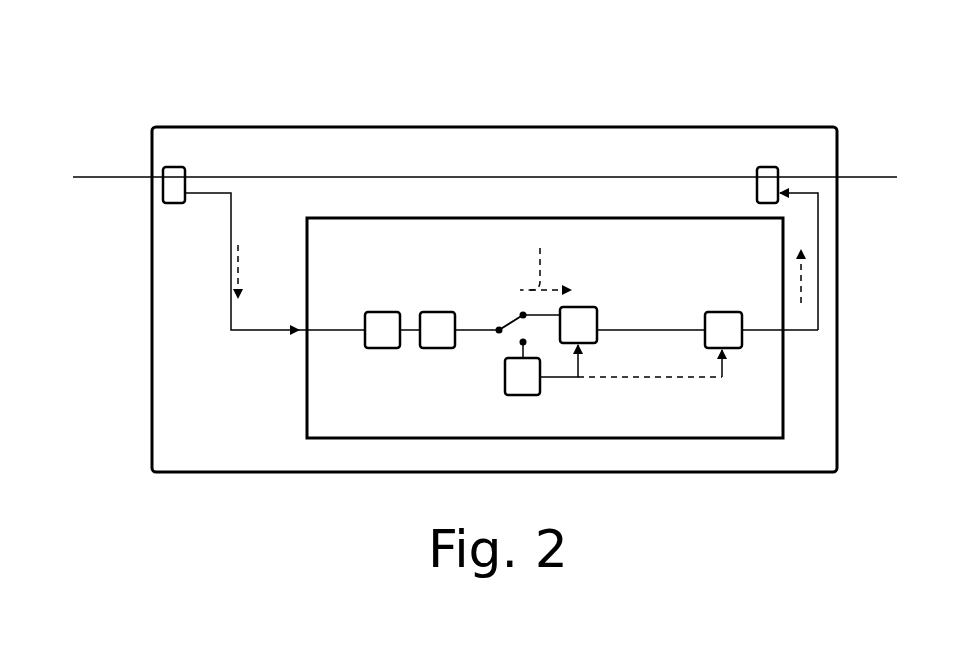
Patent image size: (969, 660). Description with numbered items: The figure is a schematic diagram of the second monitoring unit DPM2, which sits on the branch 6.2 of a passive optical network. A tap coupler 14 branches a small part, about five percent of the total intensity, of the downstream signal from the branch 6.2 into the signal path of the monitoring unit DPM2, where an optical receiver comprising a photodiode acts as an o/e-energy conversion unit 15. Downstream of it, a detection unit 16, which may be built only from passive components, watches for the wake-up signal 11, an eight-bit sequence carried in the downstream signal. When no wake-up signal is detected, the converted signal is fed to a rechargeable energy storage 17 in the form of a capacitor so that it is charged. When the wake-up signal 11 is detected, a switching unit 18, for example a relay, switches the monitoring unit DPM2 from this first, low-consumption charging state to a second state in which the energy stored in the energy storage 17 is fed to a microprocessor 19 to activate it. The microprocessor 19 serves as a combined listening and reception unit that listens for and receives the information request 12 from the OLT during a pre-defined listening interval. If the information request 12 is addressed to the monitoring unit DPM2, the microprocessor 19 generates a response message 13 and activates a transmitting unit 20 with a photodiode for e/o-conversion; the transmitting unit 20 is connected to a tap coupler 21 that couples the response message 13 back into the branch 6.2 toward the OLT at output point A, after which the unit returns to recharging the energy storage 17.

The second monitoring unit DPM2 is at (500, 100).
The branch 6.2 is at (108, 175).
The tap coupler 14 is at (173, 178).
The tap coupler 21 is at (766, 178).
The output point A is at (808, 190).
The wake-up signal 11 is at (240, 268).
The o/e-energy conversion unit 15 is at (382, 325).
The detection unit 16 is at (437, 325).
The switching unit 18 is at (508, 324).
The information request 12 is at (545, 260).
The microprocessor 19 is at (580, 320).
The rechargeable energy storage 17 is at (515, 382).
The transmitting unit 20 is at (722, 325).
The response message 13 is at (803, 287).